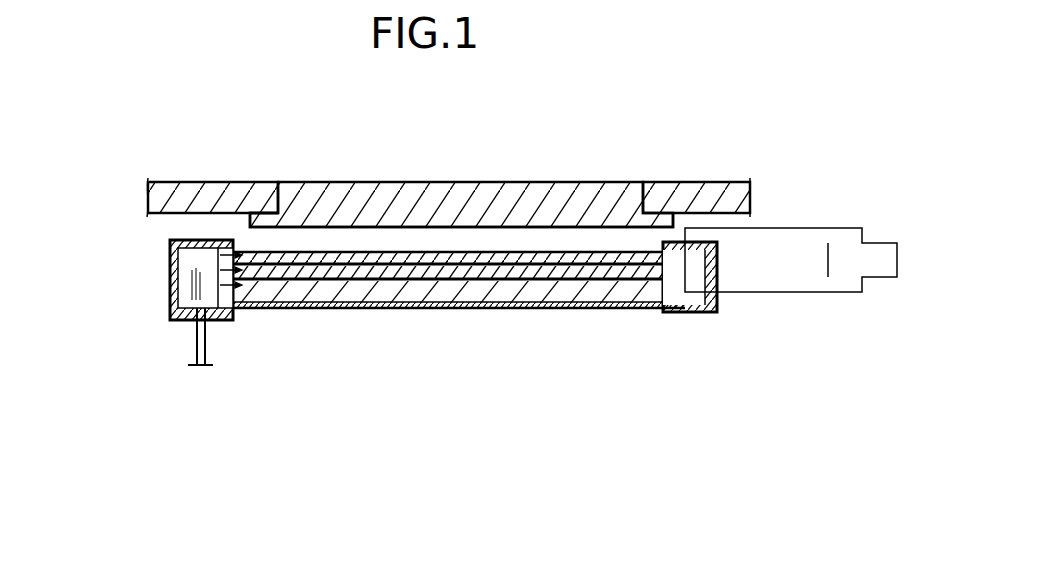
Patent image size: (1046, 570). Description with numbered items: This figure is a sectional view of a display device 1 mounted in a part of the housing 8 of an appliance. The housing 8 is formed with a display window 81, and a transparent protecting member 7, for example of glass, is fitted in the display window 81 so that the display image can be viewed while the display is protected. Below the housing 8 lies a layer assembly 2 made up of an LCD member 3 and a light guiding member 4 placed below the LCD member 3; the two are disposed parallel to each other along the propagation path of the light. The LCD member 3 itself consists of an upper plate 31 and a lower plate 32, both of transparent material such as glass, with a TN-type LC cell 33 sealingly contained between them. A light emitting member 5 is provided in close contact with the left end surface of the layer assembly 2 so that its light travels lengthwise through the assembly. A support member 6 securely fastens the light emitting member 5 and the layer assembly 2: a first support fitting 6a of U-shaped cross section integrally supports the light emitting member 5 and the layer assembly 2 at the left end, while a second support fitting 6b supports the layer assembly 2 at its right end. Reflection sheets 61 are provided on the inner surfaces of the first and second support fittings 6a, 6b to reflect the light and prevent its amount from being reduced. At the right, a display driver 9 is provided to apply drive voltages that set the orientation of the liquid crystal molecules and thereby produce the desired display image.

The display device 1 is at (685, 173).
The layer assembly 2 is at (511, 369).
The LCD member 3 is at (483, 352).
The upper plate 31 is at (625, 268).
The lower plate 32 is at (568, 285).
The LC cell 33 is at (603, 275).
The light guiding member 4 is at (537, 305).
The light emitting member 5 is at (185, 322).
The support member 6 is at (435, 287).
The first support fitting 6a is at (170, 293).
The second support fitting 6b is at (715, 300).
The reflection sheets 61 is at (190, 241).
The protecting member 7 is at (517, 190).
The housing 8 is at (230, 193).
The display window 81 is at (283, 200).
The display driver 9 is at (878, 243).